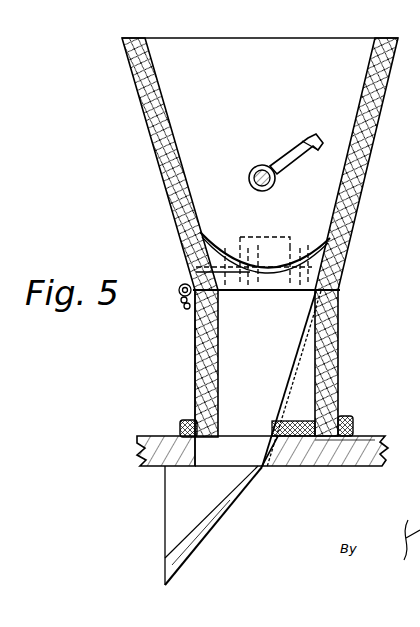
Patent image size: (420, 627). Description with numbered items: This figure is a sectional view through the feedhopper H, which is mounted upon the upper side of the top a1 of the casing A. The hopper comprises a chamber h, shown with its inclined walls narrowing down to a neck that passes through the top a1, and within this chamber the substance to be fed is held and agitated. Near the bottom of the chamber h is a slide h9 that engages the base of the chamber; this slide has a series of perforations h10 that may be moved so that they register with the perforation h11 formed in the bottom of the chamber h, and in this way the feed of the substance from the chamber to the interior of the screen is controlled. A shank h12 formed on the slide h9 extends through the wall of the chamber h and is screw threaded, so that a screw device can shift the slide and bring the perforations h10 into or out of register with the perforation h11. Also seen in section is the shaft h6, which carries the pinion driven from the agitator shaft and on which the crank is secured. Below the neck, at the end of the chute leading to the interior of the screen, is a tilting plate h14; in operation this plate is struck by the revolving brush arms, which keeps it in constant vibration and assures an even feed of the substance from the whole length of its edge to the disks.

The feedhopper H is at (134, 70).
The chamber h is at (178, 93).
The shaft h6 is at (301, 342).
The slide h9 is at (258, 252).
The perforations h10 is at (262, 262).
The perforation h11 is at (284, 250).
The shank h12 is at (200, 271).
The tilting plate h14 is at (218, 523).
The casing A is at (160, 450).
The top a1 is at (364, 438).